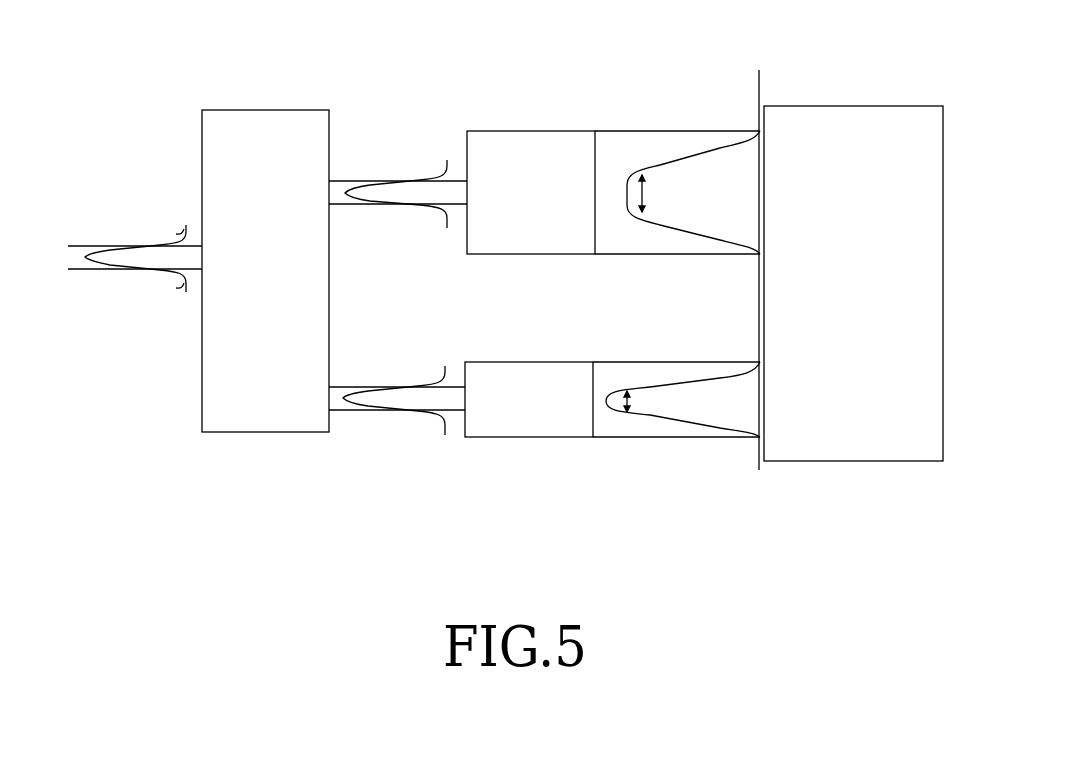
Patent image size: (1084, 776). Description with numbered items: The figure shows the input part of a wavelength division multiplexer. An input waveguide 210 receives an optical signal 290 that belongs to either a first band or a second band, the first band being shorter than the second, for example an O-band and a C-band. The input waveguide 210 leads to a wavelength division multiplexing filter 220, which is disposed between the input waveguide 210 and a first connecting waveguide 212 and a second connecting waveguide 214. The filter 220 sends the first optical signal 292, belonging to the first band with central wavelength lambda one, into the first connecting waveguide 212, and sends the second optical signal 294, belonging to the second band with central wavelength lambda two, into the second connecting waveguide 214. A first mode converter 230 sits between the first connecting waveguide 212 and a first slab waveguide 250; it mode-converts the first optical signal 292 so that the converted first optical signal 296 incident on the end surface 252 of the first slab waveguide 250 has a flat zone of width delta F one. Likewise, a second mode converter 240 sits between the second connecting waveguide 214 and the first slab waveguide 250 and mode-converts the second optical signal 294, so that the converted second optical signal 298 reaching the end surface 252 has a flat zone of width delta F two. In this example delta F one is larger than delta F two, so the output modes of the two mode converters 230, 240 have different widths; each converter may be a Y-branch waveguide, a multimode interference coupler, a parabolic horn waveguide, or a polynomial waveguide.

The input waveguide 210 is at (75, 244).
The first connecting waveguide 212 is at (353, 180).
The second connecting waveguide 214 is at (352, 386).
The wavelength division multiplexing filter 220 is at (265, 109).
The first mode converter 230 is at (541, 124).
The second mode converter 240 is at (541, 356).
The first slab waveguide 250 is at (847, 102).
The end surface of the first slab waveguide 252 is at (766, 161).
The optical signal 290 is at (106, 268).
The first optical signal 292 is at (362, 205).
The second optical signal 294 is at (360, 411).
The first optical signal incident into the end surface 296 is at (676, 228).
The second optical signal incident into the end surface 298 is at (662, 425).